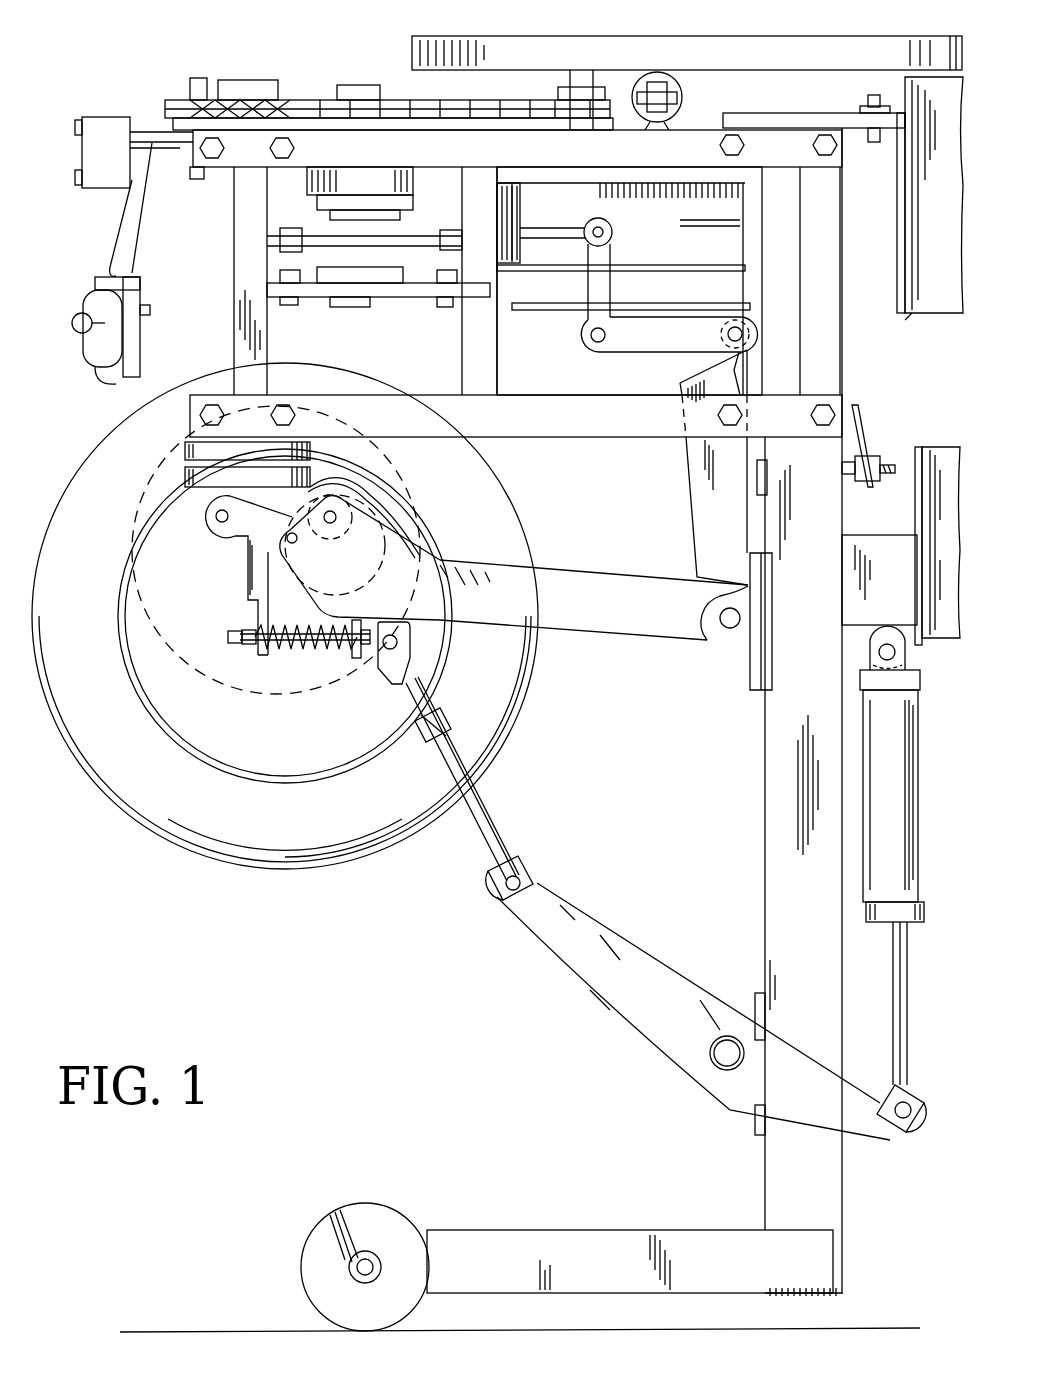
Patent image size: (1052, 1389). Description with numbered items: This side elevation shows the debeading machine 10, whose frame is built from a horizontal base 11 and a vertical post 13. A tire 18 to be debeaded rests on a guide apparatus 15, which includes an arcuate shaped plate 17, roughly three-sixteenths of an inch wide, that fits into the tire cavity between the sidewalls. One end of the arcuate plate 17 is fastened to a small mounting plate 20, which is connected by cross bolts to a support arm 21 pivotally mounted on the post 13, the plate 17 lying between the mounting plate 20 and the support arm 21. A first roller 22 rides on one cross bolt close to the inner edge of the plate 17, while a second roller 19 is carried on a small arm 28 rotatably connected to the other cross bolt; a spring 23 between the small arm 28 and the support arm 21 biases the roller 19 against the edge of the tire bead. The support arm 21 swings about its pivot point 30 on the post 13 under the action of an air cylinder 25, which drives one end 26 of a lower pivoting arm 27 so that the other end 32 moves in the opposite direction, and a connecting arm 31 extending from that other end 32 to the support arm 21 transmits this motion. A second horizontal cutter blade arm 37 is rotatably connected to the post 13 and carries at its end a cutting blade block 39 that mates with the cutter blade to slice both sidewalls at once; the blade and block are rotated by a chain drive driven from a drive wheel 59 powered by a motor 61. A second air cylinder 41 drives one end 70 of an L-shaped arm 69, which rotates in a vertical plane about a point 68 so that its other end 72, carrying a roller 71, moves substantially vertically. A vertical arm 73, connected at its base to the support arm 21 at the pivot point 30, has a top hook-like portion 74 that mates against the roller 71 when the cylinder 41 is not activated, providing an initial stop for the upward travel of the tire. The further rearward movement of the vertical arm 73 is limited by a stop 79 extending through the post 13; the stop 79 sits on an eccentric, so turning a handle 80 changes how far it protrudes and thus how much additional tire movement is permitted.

The debeading machine 10 is at (403, 927).
The horizontal base 11 is at (592, 1215).
The vertical post 13 is at (772, 907).
The guide apparatus 15 is at (212, 586).
The arcuate shaped plate 17 is at (416, 498).
The tire 18 is at (486, 741).
The second roller 19 is at (205, 531).
The mounting plate 20 is at (406, 540).
The support arm 21 is at (576, 632).
The first roller 22 is at (360, 558).
The spring 23 is at (316, 651).
The air cylinder 25 is at (905, 822).
The one end of pivoting arm 26 is at (885, 1140).
The lower pivoting arm 27 is at (676, 980).
The small arm 28 is at (720, 1065).
The pivot point 30 is at (730, 630).
The connecting arm 31 is at (486, 800).
The other end of pivoting arm 32 is at (533, 885).
The second horizontal cutter blade arm 37 is at (622, 432).
The cutting blade block 39 is at (190, 450).
The second air cylinder 41 is at (600, 200).
The drive wheel 59 is at (623, 48).
The motor 61 is at (920, 313).
The point 68 is at (585, 341).
The L-shaped arm 69 is at (610, 342).
The one end of L-shaped arm 70 is at (613, 243).
The roller 71 is at (742, 333).
The other end of L-shaped arm 72 is at (712, 330).
The vertical arm 73 is at (697, 507).
The top hook-like portion 74 is at (740, 366).
The stop 79 is at (848, 480).
The handle 80 is at (858, 410).